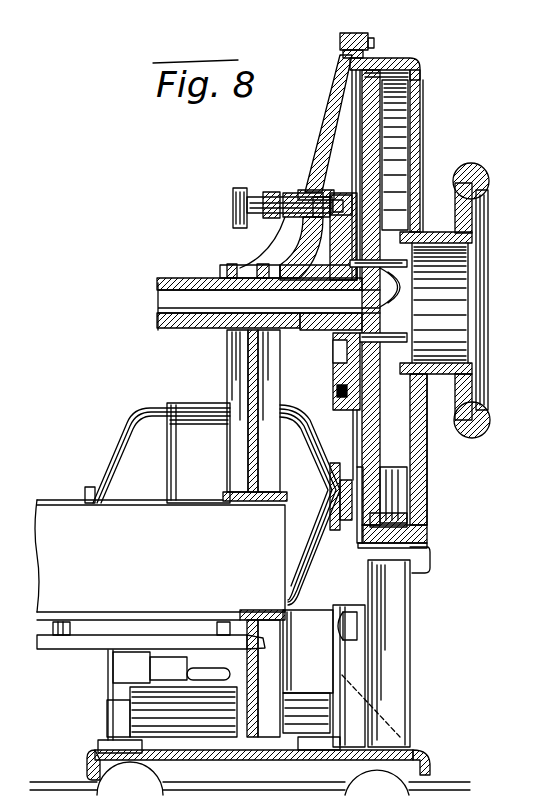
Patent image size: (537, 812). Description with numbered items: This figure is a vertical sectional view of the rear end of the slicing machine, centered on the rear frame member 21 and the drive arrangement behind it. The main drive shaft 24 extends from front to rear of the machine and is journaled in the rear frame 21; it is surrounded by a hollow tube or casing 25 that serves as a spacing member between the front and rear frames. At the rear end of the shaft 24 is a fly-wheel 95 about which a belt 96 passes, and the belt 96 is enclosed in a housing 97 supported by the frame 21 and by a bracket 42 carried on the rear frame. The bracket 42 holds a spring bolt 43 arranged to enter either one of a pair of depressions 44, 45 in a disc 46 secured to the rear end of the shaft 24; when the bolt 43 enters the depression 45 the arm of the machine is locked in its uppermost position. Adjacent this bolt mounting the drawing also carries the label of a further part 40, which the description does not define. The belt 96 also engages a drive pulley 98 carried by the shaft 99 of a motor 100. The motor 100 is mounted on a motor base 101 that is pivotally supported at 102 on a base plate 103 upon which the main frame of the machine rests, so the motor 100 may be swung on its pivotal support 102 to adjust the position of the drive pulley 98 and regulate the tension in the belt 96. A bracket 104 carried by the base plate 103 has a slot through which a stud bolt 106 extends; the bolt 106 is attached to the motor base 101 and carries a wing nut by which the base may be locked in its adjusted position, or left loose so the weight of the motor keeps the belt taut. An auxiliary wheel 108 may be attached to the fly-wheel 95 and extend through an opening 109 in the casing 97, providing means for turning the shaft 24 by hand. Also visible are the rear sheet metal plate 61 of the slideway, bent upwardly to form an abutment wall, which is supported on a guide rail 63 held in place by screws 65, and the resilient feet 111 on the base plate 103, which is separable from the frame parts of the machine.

The belt 96 is at (388, 58).
The fly-wheel 95 is at (400, 126).
The housing 97 is at (422, 160).
The bracket 42 is at (300, 158).
The spring bolt 43 is at (283, 200).
The depression 45 is at (337, 197).
The pump body 40 is at (323, 236).
The hollow tube or casing 25 is at (165, 281).
The drive shaft 24 is at (168, 300).
The rear frame member 21 is at (233, 364).
The disc 46 is at (350, 352).
The depression 44 is at (337, 391).
The motor 100 is at (127, 467).
The sheet metal plate 61 is at (160, 560).
The shaft 99 is at (353, 482).
The drive pulley 98 is at (408, 489).
The auxiliary wheel 108 is at (488, 417).
The opening 109 is at (423, 377).
The guide rail 63 is at (83, 640).
The motor base 101 is at (125, 665).
The pivotal support 102 is at (202, 713).
The screws 65 is at (297, 671).
The bracket 104 is at (350, 690).
The stud bolt 106 is at (360, 622).
The base plate 103 is at (87, 765).
The resilient feet 111 is at (165, 778).